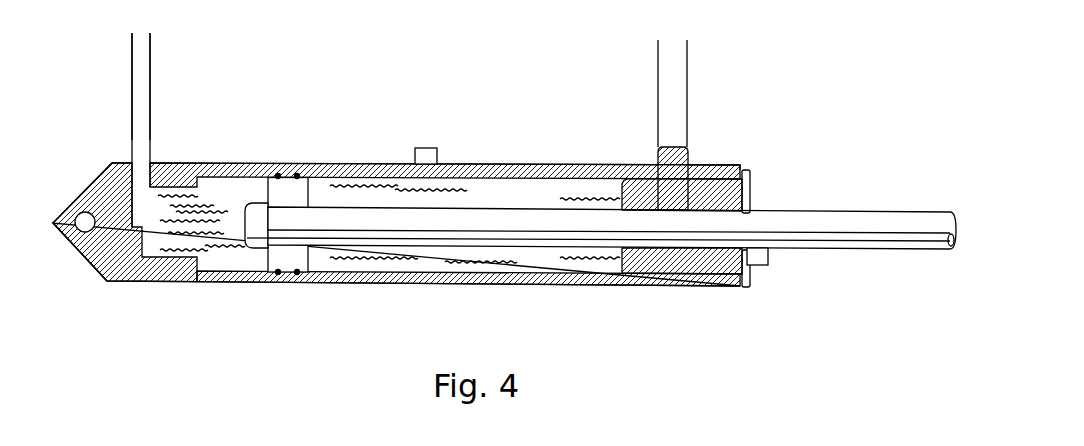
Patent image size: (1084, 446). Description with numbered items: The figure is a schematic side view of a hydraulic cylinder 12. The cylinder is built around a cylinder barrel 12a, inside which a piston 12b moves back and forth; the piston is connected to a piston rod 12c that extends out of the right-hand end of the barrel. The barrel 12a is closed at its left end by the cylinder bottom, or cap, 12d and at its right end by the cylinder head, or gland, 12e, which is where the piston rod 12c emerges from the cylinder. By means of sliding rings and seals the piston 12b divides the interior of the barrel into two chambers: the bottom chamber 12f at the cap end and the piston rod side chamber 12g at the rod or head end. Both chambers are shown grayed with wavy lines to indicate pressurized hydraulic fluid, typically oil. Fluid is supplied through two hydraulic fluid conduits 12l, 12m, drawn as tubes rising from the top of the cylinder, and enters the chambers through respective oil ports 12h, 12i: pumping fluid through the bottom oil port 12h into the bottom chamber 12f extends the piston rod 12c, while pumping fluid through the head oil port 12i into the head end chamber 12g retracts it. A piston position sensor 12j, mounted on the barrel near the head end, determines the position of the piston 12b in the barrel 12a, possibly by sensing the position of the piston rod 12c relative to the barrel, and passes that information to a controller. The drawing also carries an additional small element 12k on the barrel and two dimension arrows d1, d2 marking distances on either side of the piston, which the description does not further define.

The hydraulic cylinder 12 is at (138, 330).
The cylinder barrel 12a is at (376, 283).
The piston 12b is at (312, 190).
The piston rod 12c is at (865, 210).
The cylinder bottom 12d is at (197, 183).
The cylinder head 12e is at (630, 183).
The bottom chamber 12f is at (187, 222).
The piston rod side chamber 12g is at (464, 258).
The bottom oil port 12h is at (140, 135).
The head oil port 12i is at (658, 142).
The piston position sensor 12j is at (760, 265).
The upper sensor 12k is at (426, 148).
The hydraulic fluid conduit 12l is at (128, 58).
The hydraulic fluid conduit 12m is at (687, 72).
The distance d1 is at (210, 293).
The distance d2 is at (623, 298).